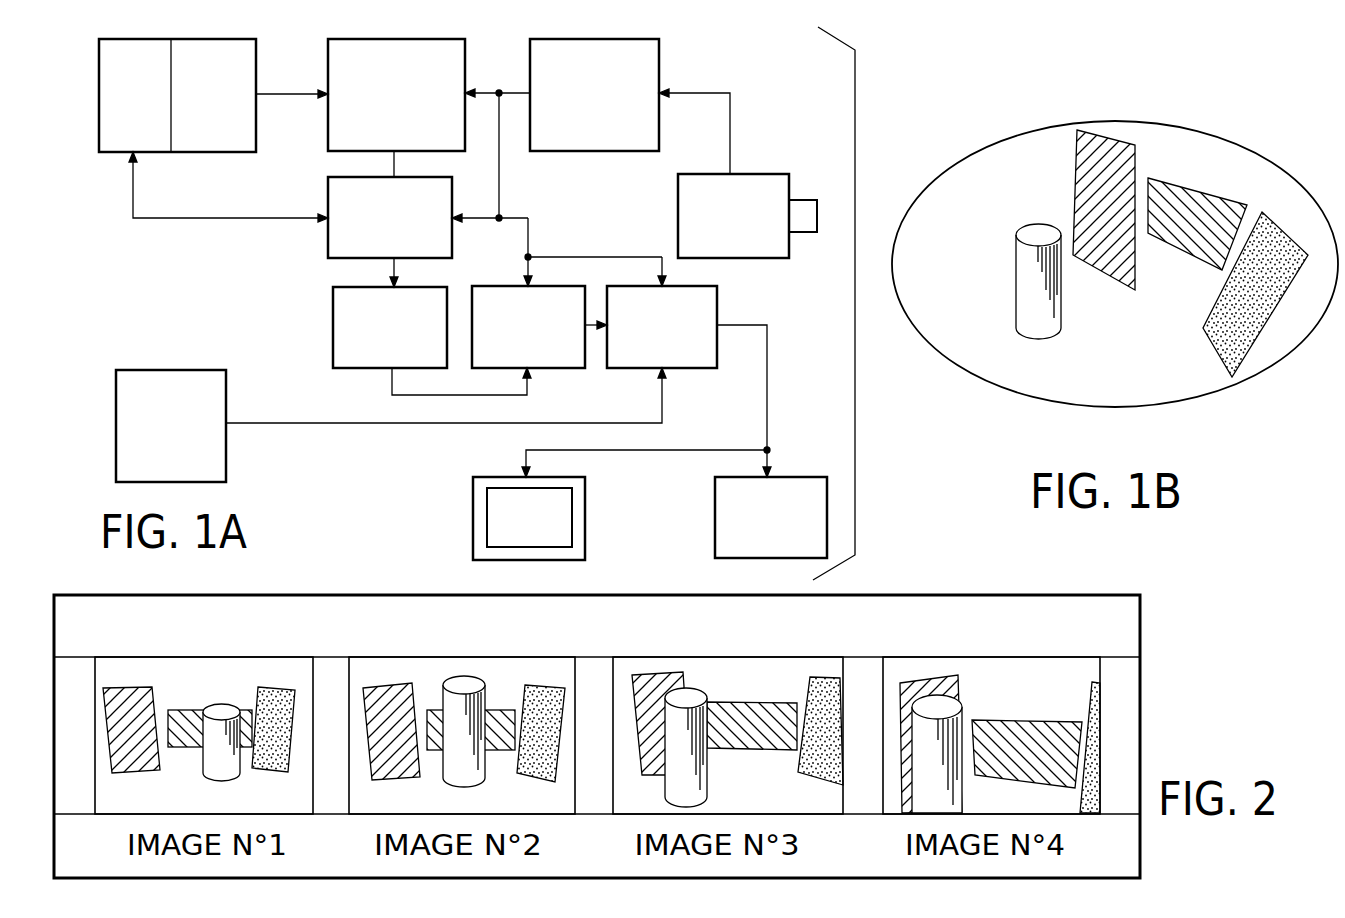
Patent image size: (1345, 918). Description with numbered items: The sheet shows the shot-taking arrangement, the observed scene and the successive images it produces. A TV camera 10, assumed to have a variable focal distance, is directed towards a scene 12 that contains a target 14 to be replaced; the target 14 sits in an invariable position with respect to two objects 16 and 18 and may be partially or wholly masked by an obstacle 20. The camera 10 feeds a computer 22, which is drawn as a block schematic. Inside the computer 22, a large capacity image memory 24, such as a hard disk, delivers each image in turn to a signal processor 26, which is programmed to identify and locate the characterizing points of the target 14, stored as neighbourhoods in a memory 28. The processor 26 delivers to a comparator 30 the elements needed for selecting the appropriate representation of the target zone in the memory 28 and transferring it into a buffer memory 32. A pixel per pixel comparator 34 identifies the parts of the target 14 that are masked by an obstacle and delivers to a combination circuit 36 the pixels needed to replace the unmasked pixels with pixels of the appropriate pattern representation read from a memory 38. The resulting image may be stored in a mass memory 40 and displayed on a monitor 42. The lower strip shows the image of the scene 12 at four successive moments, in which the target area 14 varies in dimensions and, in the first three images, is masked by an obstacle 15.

In FIG. 1A, the TV camera 10 is at (722, 222).
In FIG. 1B, the scene 12 is at (1008, 132).
In FIG. 1B, the target 14 is at (1183, 178).
In FIG. 2, the target 14 is at (188, 710).
In FIG. 2, the obstacle 15 is at (215, 773).
In FIG. 1B, the object 16 is at (1073, 195).
In FIG. 1B, the object 18 is at (1253, 352).
In FIG. 1B, the obstacle 20 is at (1061, 302).
In FIG. 1A, the computer 22 is at (160, 304).
In FIG. 1A, the image memory 24 is at (659, 65).
In FIG. 1A, the signal processor 26 is at (466, 72).
In FIG. 1A, the memory 28 is at (213, 152).
In FIG. 1A, the comparator 30 is at (328, 237).
In FIG. 1A, the buffer memory 32 is at (333, 320).
In FIG. 1A, the pixel per pixel comparator 34 is at (558, 368).
In FIG. 1A, the combination circuit 36 is at (687, 368).
In FIG. 1A, the memory 38 is at (226, 460).
In FIG. 1A, the mass memory 40 is at (715, 522).
In FIG. 1A, the monitor 42 is at (473, 525).